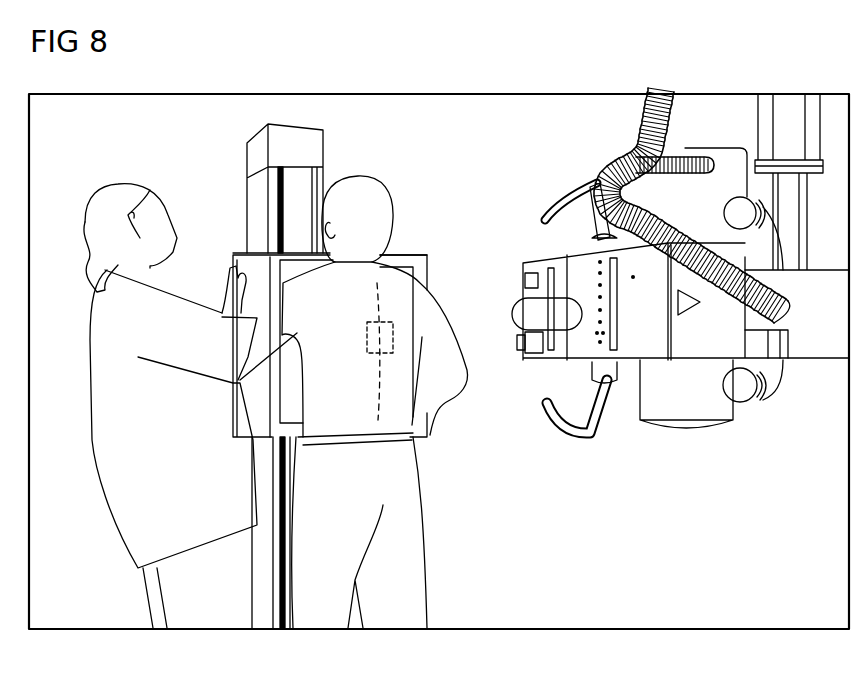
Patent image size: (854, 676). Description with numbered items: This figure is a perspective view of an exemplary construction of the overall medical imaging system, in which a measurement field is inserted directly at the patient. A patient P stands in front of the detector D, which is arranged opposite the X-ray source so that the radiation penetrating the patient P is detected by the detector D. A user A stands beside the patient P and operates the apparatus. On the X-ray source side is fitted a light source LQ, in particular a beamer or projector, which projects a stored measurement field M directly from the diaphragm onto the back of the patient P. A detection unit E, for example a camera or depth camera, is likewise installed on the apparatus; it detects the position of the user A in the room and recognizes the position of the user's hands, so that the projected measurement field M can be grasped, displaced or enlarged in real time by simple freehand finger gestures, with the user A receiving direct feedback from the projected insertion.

The user A is at (108, 398).
The detector D is at (400, 268).
The patient P is at (430, 315).
The measurement field M is at (367, 337).
The detection unit E is at (535, 347).
The light source LQ is at (547, 314).